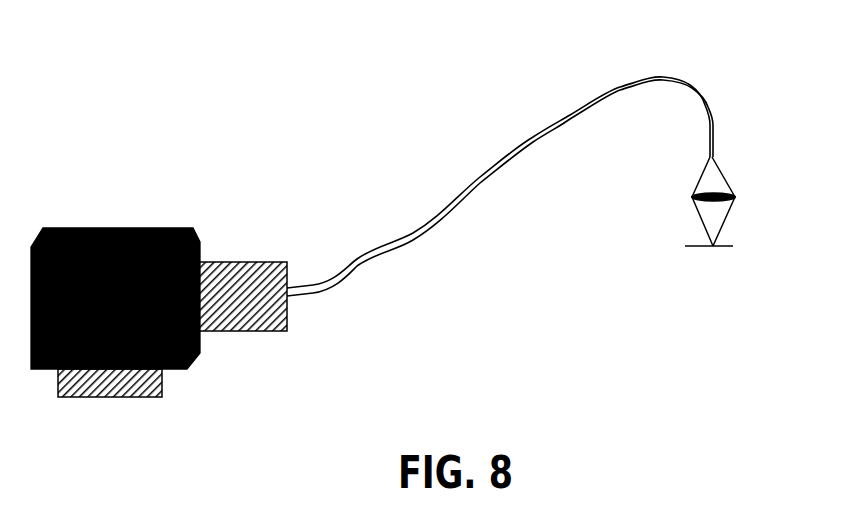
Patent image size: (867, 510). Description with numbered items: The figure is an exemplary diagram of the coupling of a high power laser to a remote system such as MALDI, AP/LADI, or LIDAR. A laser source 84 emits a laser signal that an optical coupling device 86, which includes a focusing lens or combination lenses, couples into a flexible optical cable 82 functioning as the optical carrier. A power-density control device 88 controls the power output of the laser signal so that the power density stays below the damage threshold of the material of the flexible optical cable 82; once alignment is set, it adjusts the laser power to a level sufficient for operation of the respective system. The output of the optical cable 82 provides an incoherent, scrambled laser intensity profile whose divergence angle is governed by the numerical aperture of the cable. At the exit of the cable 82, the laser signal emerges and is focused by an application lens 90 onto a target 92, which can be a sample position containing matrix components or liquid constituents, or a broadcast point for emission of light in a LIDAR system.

The flexible optical cable 82 is at (662, 77).
The laser source 84 is at (113, 231).
The optical coupling device 86 is at (247, 262).
The power-density control device 88 is at (123, 397).
The application lens 90 is at (730, 190).
The target 92 is at (730, 243).